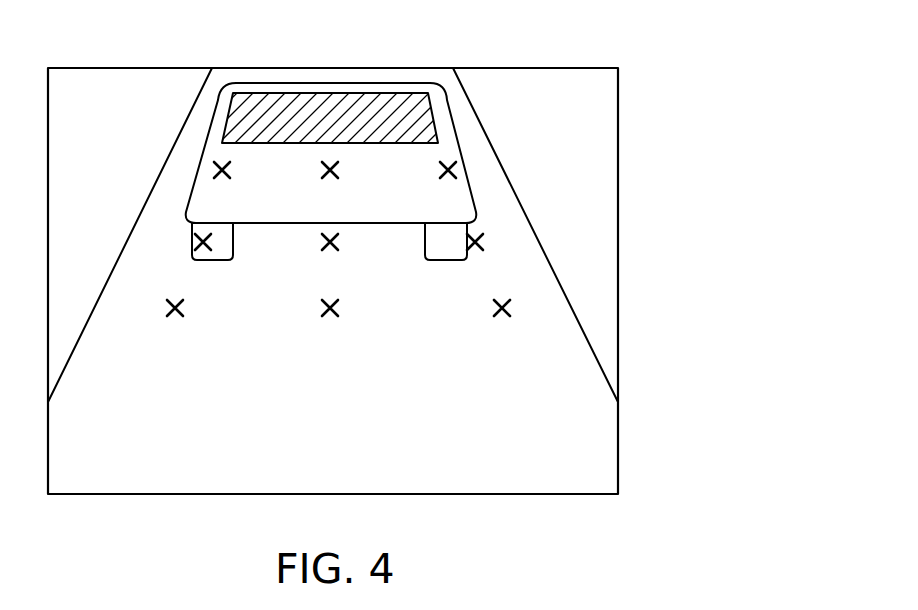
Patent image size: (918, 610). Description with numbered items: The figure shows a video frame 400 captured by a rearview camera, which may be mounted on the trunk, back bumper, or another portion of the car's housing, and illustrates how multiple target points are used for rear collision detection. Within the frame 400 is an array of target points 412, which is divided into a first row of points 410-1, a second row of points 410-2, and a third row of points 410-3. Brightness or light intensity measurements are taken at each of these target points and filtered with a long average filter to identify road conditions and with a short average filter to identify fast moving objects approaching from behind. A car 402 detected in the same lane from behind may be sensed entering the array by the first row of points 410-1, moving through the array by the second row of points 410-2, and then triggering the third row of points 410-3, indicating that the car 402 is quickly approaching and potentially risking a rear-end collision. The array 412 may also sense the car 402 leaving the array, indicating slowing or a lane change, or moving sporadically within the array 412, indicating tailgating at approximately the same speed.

The video frame 400 is at (573, 68).
The car 402 is at (302, 93).
The first row of points 410-1 is at (482, 192).
The second row of points 410-2 is at (497, 262).
The third row of points 410-3 is at (438, 301).
The array of target points 412 is at (421, 275).